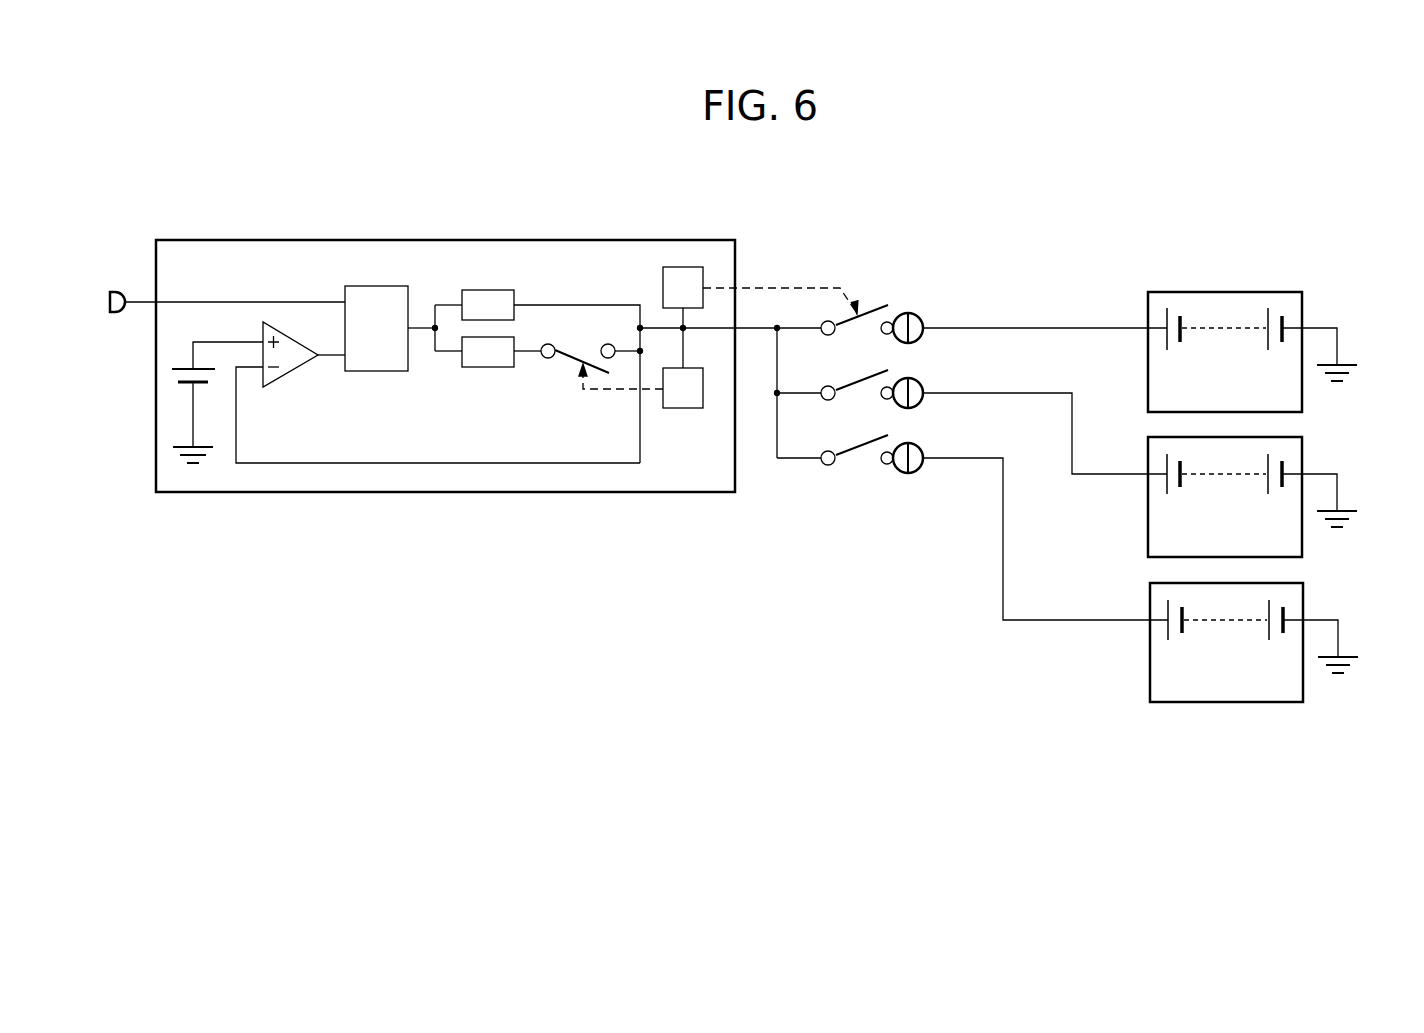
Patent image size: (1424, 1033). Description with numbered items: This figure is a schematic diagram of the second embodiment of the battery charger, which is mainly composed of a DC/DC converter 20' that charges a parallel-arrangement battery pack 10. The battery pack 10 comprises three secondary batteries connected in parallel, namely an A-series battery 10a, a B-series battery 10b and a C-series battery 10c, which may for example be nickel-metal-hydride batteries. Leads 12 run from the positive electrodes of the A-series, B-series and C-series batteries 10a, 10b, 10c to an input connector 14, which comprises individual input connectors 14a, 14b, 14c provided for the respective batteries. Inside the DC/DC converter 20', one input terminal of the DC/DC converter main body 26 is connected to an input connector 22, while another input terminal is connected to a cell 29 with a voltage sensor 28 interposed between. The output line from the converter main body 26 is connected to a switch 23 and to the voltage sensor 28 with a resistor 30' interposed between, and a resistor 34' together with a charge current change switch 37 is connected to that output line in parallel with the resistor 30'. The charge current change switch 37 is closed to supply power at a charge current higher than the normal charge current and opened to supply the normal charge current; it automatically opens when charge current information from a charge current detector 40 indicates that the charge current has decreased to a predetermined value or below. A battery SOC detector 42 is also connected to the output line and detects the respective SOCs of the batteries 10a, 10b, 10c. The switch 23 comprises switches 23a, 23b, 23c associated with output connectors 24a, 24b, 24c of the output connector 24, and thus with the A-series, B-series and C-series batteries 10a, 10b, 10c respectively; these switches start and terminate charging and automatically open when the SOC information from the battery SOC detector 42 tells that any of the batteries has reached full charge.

The DC/DC converter 20' is at (445, 326).
The input connector 22 is at (121, 288).
The cell 29 is at (178, 368).
The voltage sensor 28 is at (294, 358).
The DC/DC converter main body 26 is at (362, 366).
The resistor 30' is at (537, 354).
The resistor 34' is at (488, 383).
The charge current change switch 37 is at (561, 362).
The battery SOC detector 42 is at (663, 281).
The charge current detector 40 is at (684, 410).
The output connector 24 is at (967, 247).
The output connector 24a is at (862, 315).
The output connector 24b is at (862, 380).
The output connector 24c is at (862, 445).
The switch 23 is at (905, 545).
The switch 23a is at (940, 272).
The switch 23b is at (895, 272).
The switch 23c is at (857, 272).
The input connector 14 is at (1095, 284).
The input connector 14a is at (920, 450).
The input connector 14b is at (920, 386).
The input connector 14c is at (925, 320).
The leads 12 is at (1129, 326).
The parallel-arrangement battery pack 10 is at (1281, 497).
The A-series battery 10a is at (1261, 628).
The B-series battery 10b is at (1302, 455).
The C-series battery 10c is at (1302, 402).